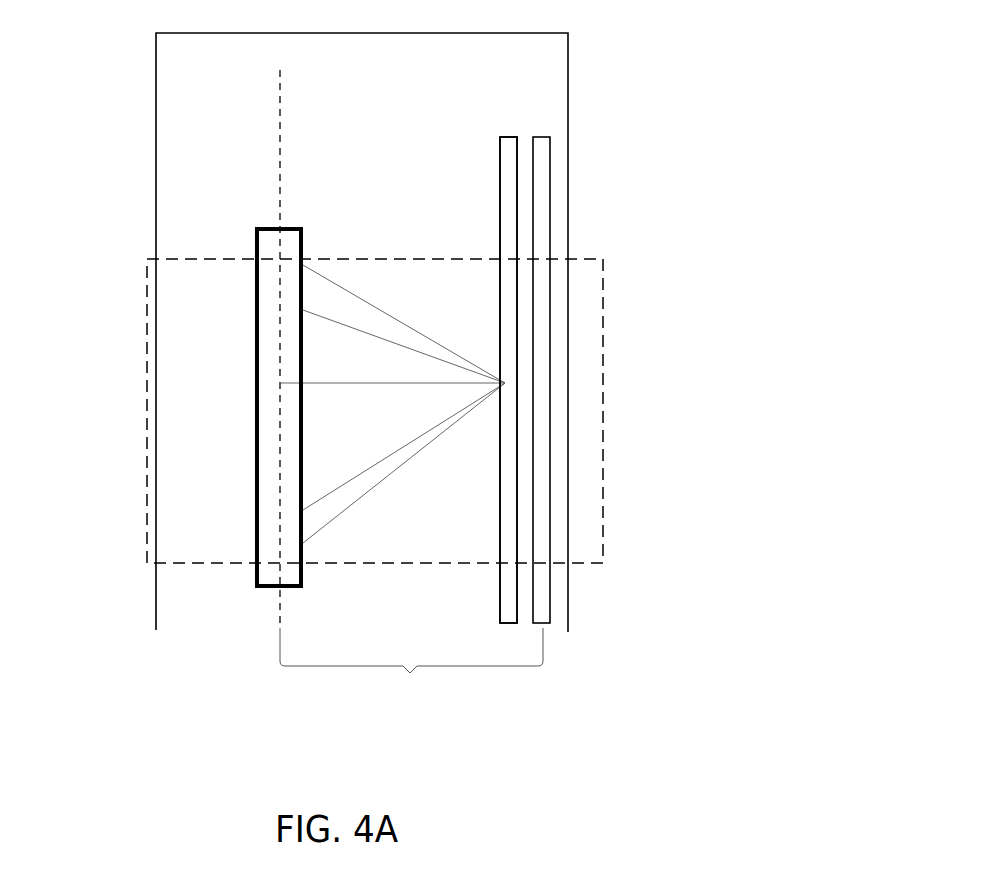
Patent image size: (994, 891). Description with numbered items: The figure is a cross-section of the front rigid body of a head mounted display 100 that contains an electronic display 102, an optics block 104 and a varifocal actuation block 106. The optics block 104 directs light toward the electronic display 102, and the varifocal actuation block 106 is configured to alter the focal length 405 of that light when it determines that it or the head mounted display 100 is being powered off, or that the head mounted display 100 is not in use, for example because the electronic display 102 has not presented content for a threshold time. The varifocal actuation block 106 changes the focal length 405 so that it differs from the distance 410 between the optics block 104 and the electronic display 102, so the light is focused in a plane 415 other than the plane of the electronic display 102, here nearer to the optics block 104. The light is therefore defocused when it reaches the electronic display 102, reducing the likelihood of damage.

The head mounted display 100 is at (568, 65).
The electronic display 102 is at (545, 170).
The optics block 104 is at (278, 210).
The varifocal actuation block 106 is at (147, 288).
The focal length 405 is at (392, 349).
The distance 410 is at (411, 672).
The plane 415 is at (507, 607).